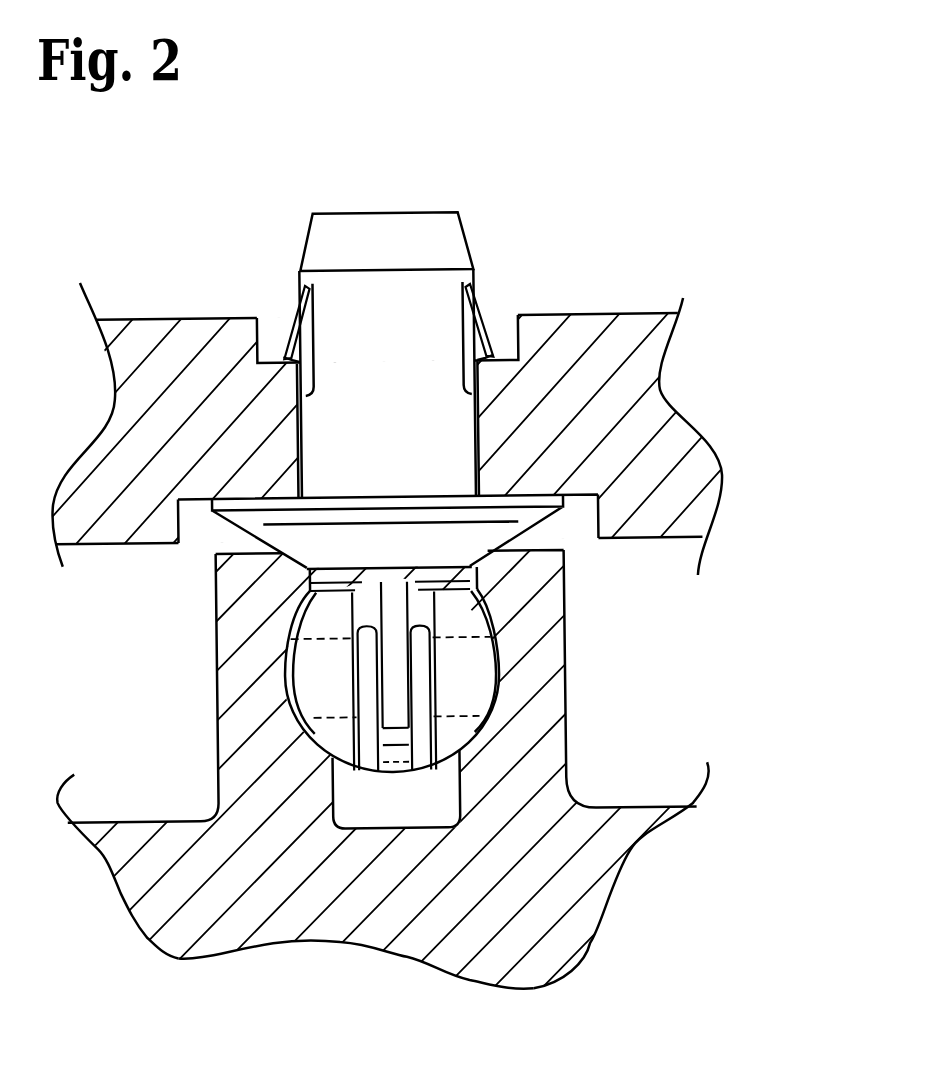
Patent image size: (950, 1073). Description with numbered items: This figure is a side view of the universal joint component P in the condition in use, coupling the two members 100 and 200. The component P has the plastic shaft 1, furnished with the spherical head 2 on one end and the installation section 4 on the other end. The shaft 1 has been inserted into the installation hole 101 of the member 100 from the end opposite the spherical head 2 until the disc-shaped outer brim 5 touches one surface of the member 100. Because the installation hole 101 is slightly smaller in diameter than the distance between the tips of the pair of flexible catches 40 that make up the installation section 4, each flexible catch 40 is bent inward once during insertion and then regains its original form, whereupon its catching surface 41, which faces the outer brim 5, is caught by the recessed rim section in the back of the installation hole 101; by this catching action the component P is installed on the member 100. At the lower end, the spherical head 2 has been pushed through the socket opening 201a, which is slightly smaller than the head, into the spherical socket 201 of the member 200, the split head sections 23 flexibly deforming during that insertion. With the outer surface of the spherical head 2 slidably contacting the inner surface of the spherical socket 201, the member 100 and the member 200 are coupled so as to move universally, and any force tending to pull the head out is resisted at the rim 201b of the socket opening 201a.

The universal joint component P is at (392, 230).
The shaft 1 is at (390, 273).
The installation section 4 is at (405, 551).
The flexible catch 40 is at (306, 334).
The catching surface 41 is at (287, 359).
The installation hole 101 is at (481, 426).
The outer brim 5 is at (554, 497).
The member 100 is at (702, 466).
The socket opening 201a is at (489, 589).
The rim 201b is at (493, 613).
The spherical socket 201 is at (519, 696).
The split head section 23 is at (470, 699).
The member 200 is at (578, 913).
The spherical head 2 is at (408, 810).